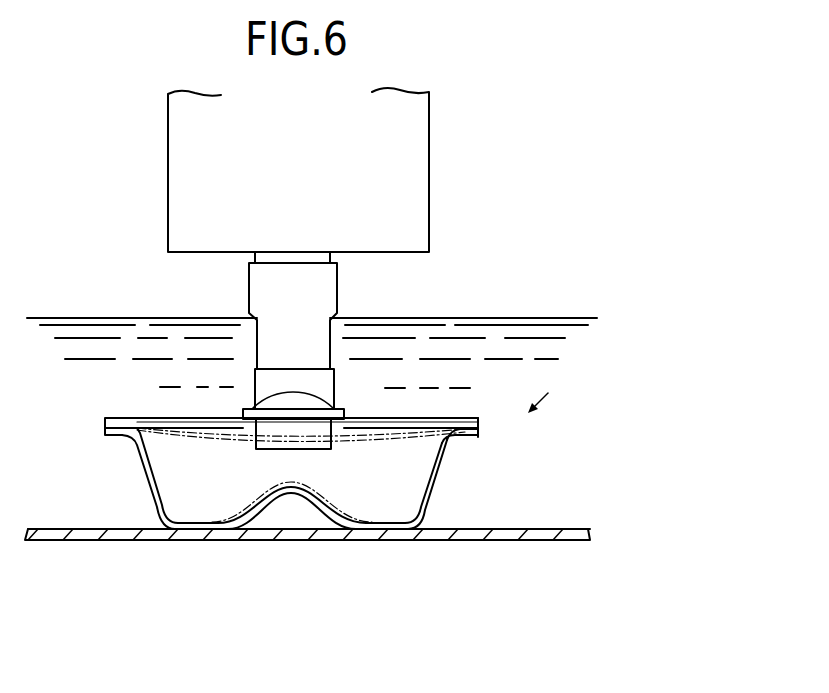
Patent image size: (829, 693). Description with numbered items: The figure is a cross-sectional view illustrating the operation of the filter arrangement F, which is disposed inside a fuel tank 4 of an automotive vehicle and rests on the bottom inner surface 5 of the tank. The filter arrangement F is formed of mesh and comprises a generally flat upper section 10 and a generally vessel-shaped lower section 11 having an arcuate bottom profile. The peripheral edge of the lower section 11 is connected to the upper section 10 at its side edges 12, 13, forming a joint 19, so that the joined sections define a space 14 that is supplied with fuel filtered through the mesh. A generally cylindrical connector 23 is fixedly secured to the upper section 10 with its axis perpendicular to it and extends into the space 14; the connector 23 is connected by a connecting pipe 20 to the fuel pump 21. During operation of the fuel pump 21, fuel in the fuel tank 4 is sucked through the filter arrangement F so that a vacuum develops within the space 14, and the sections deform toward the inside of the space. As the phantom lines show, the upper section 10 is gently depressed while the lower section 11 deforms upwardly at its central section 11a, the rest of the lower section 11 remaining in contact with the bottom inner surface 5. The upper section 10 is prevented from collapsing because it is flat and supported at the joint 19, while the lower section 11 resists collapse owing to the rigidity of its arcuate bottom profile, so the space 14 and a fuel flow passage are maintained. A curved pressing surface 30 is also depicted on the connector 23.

The fuel pump 21 is at (429, 135).
The connecting pipe 20 is at (337, 285).
The connector 23 is at (262, 377).
The curved pressing surface 30 is at (292, 398).
The upper section 10 is at (372, 417).
The longitudinal side 12 is at (472, 417).
The joint 19 is at (479, 428).
The side edge 13 is at (472, 437).
The lower section 11 is at (433, 500).
The central section 11a is at (288, 541).
The space 14 is at (380, 507).
The bottom inner surface 5 is at (97, 528).
The fuel tank 4 is at (145, 541).
The filter arrangement F is at (546, 392).